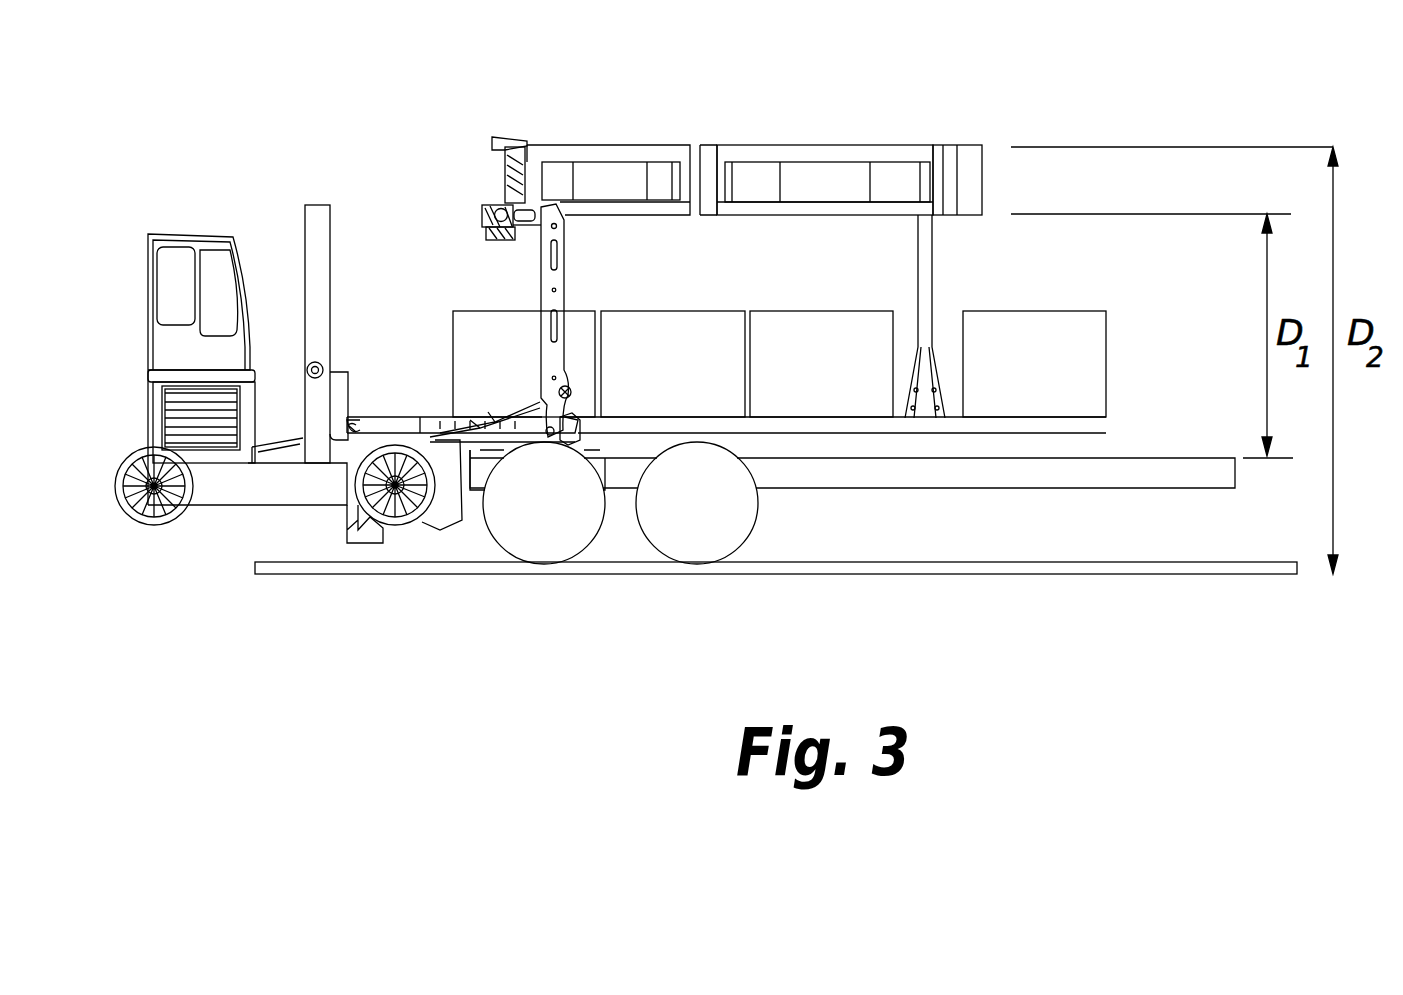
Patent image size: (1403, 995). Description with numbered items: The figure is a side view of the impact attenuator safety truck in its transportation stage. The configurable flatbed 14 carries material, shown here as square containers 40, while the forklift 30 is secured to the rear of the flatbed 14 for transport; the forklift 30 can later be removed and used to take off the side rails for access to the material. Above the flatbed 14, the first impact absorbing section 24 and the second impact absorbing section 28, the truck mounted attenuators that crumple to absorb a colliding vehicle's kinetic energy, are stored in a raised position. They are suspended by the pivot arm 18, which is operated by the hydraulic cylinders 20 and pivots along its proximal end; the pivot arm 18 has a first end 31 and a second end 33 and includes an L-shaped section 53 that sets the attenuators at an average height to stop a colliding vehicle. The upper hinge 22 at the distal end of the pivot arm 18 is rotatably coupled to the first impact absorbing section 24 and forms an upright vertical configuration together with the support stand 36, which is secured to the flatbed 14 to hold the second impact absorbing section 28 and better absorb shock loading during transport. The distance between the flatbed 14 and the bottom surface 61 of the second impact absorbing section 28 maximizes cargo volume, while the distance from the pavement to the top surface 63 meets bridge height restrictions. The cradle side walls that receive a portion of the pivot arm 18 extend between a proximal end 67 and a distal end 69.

The configurable flatbed 14 is at (1173, 455).
The pivot arm 18 is at (540, 290).
The hydraulic cylinders 20 is at (517, 440).
The upper hinge 22 is at (488, 205).
The first impact absorbing section 24 is at (627, 147).
The second impact absorbing section 28 is at (848, 142).
The forklift 30 is at (220, 515).
The first end 31 is at (565, 440).
The second end 33 is at (487, 217).
The support stand 36 is at (932, 263).
The square containers 40 is at (1106, 331).
The L-shaped section 53 is at (543, 205).
The bottom surface 61 is at (803, 217).
The top surface 63 is at (893, 148).
The proximal end 67 is at (403, 517).
The distal end 69 is at (549, 440).